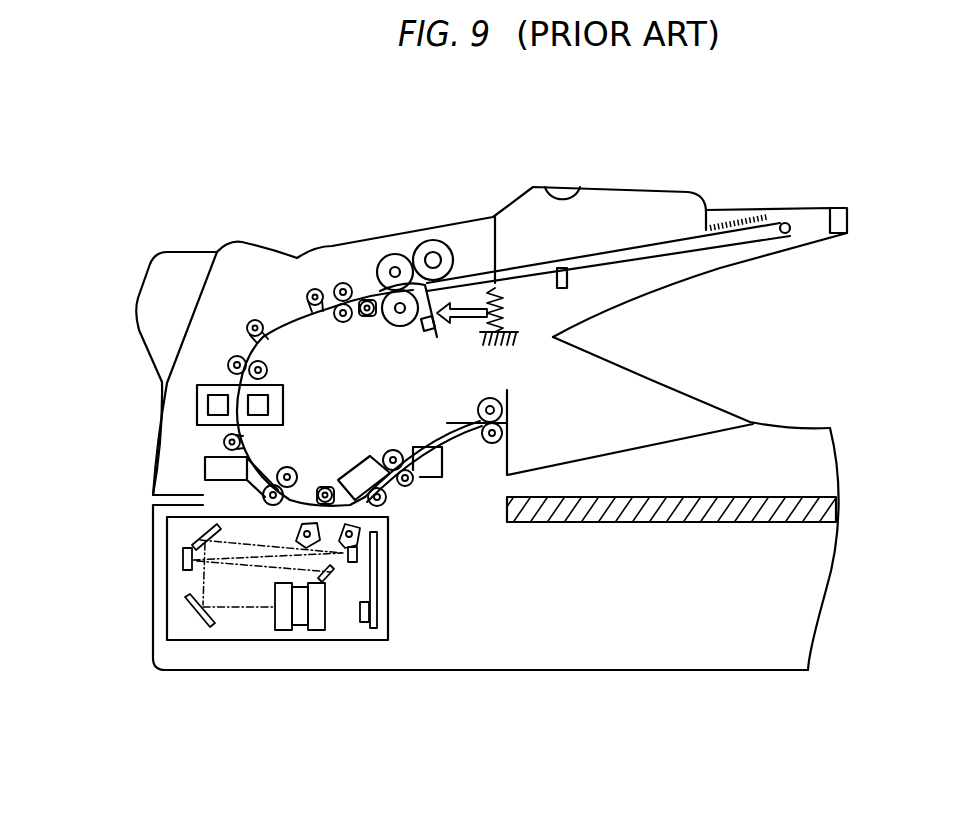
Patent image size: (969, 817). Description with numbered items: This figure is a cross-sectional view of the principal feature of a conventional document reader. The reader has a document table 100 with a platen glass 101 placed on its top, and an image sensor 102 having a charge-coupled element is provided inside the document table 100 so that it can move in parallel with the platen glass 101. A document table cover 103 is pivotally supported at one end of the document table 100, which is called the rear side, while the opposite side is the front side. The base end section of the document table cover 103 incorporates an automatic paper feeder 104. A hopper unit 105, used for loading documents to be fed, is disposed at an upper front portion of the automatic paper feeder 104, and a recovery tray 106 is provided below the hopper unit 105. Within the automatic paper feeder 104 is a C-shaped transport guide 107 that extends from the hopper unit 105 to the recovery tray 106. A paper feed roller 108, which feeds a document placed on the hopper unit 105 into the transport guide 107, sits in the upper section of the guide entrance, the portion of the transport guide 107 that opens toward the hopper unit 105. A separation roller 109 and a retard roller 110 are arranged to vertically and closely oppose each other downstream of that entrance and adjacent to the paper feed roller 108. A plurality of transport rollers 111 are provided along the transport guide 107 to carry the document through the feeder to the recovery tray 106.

The document table 100 is at (565, 672).
The platen glass 101 is at (763, 522).
The image sensor 102 is at (315, 642).
The document table cover 103 is at (803, 427).
The automatic paper feeder 104 is at (328, 232).
The hopper unit 105 is at (730, 208).
The recovery tray 106 is at (703, 434).
The transport guide 107 is at (287, 308).
The paper feed roller 108 is at (452, 248).
The separation roller 109 is at (395, 254).
The retard roller 110 is at (382, 294).
The transport rollers 111 is at (337, 283).